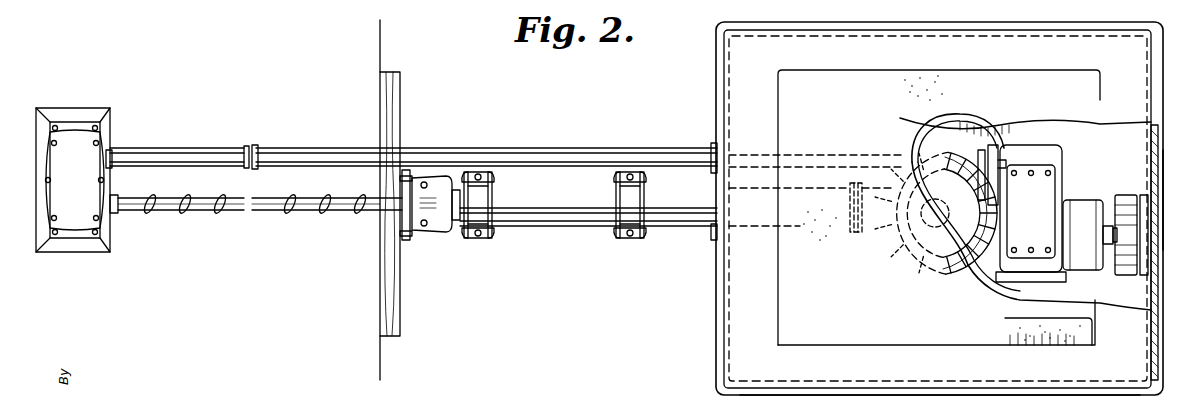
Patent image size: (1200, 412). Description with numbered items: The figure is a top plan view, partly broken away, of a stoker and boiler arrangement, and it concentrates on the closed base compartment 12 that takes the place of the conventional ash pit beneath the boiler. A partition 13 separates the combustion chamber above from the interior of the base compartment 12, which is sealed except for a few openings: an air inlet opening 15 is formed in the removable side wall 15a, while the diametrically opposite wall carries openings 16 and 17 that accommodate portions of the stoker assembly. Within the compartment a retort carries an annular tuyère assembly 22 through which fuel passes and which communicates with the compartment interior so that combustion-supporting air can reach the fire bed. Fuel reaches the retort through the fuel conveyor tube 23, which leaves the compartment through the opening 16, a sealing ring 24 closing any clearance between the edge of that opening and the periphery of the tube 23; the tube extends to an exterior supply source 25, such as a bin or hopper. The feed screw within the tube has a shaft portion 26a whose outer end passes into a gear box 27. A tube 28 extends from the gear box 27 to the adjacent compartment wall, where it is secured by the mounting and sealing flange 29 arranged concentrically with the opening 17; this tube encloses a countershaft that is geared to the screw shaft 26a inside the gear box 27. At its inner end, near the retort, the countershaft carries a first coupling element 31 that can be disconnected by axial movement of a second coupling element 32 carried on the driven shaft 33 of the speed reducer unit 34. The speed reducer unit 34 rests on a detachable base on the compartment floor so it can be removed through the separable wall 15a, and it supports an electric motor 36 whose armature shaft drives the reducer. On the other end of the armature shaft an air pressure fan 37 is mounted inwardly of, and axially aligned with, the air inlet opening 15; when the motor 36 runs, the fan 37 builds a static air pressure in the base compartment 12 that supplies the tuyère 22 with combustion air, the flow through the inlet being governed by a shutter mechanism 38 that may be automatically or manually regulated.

The base compartment 12 is at (1056, 378).
The partition 13 is at (912, 67).
The air inlet opening 15 is at (1160, 210).
The removable side wall 15a is at (1150, 306).
The opening 16 is at (731, 232).
The opening 17 is at (730, 158).
The tuyère assembly 22 is at (946, 214).
The fuel conveyor tube 23 is at (568, 229).
The sealing ring 24 is at (712, 236).
The supply source 25 is at (389, 53).
The shaft portion of the feed screw 26a is at (122, 212).
The gear box 27 is at (78, 133).
The tube 28 is at (310, 149).
The mounting and sealing flange 29 is at (712, 146).
The coupling element 31 is at (980, 160).
The second coupling element 32 is at (991, 148).
The driven shaft 33 is at (1004, 162).
The speed reducer unit 34 is at (1031, 213).
The electric motor 36 is at (1088, 235).
The air pressure fan 37 is at (1127, 196).
The shutter mechanism 38 is at (1149, 258).